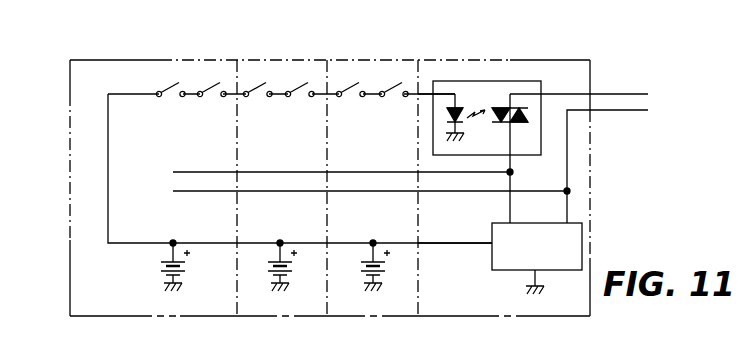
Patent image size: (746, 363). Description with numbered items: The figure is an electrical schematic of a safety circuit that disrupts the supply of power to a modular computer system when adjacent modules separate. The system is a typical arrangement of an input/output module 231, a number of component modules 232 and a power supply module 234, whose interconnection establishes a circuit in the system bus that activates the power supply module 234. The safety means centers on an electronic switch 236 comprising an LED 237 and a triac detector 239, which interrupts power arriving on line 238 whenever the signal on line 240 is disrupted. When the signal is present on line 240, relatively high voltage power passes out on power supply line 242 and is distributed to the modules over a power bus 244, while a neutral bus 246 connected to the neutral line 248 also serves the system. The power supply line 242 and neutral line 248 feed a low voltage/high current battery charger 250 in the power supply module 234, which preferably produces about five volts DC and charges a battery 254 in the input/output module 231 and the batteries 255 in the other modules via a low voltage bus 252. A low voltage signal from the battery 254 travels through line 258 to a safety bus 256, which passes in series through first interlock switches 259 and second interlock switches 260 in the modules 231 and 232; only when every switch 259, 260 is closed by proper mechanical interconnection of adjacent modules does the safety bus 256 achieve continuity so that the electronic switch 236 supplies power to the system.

The input/output module 231 is at (142, 317).
The component modules 232 is at (367, 317).
The power supply module 234 is at (492, 317).
The electronic switch 236 is at (520, 78).
The LED 237 is at (462, 112).
The line 238 is at (613, 94).
The triac detector 239 is at (530, 117).
The line 240 is at (425, 93).
The power supply line 242 is at (512, 175).
The power bus 244 is at (262, 172).
The neutral bus 246 is at (265, 191).
The neutral line 248 is at (618, 110).
The battery charger 250 is at (583, 226).
The low voltage bus 252 is at (432, 245).
The battery 254 is at (160, 263).
The batteries 255 is at (265, 267).
The safety bus 256 is at (137, 92).
The line 258 is at (108, 162).
The first interlock switch 259 is at (212, 83).
The second interlock switch 260 is at (170, 94).